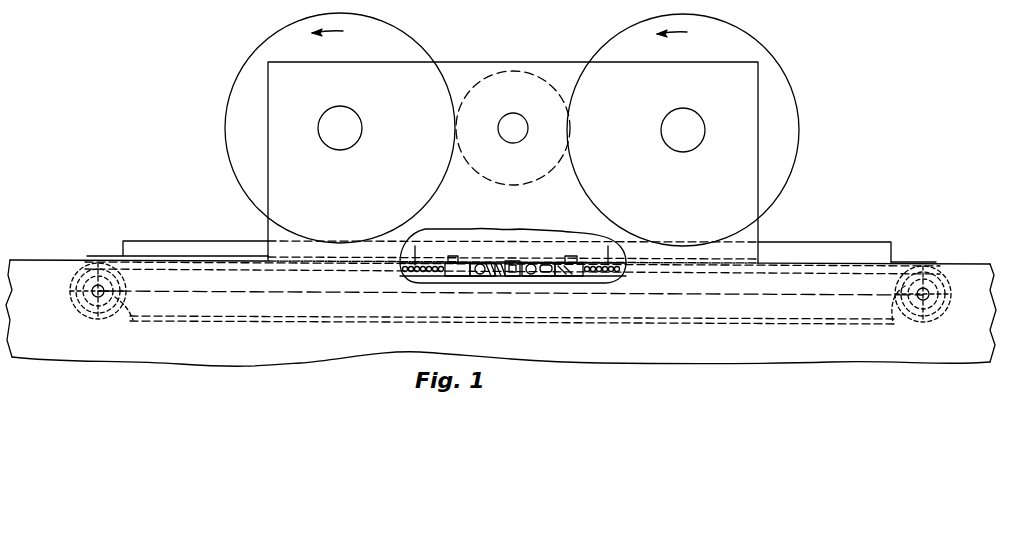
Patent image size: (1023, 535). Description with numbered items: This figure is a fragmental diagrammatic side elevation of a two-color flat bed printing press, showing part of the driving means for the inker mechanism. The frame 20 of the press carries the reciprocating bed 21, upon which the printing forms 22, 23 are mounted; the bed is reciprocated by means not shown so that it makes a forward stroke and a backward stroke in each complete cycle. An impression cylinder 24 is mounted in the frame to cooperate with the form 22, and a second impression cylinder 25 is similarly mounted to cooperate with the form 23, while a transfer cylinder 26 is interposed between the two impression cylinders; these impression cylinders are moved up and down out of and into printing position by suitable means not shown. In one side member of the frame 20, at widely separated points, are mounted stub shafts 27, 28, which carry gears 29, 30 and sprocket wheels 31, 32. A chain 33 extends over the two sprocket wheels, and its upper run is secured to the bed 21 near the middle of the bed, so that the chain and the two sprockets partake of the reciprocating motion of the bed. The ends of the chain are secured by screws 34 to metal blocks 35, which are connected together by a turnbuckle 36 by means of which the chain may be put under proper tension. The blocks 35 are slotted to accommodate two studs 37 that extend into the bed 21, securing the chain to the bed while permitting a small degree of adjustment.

The frame 20 is at (962, 264).
The reciprocating bed 21 is at (898, 262).
The printing form 22 is at (156, 250).
The printing form 23 is at (847, 251).
The impression cylinder 24 is at (246, 73).
The second impression cylinder 25 is at (786, 94).
The transfer cylinder 26 is at (540, 73).
The stub shaft 27 is at (92, 301).
The stub shaft 28 is at (923, 300).
The gear 29 is at (99, 297).
The gear 30 is at (938, 313).
The sprocket wheel 31 is at (131, 316).
The sprocket wheel 32 is at (894, 323).
The chain 33 is at (617, 281).
The screws 34 is at (454, 262).
The metal blocks 35 is at (492, 266).
The turnbuckle 36 is at (513, 263).
The studs 37 is at (479, 265).